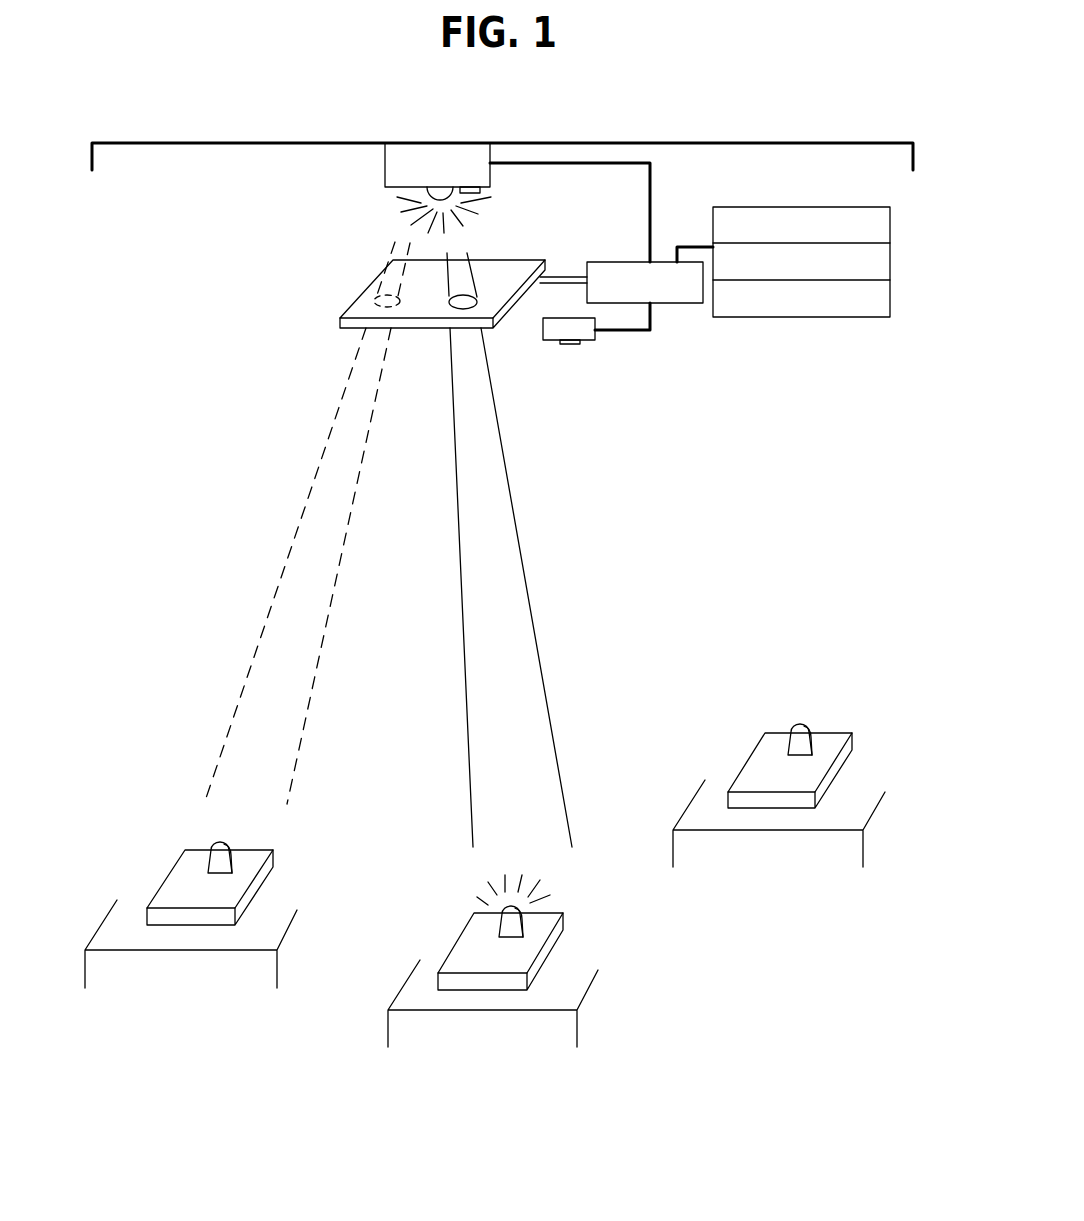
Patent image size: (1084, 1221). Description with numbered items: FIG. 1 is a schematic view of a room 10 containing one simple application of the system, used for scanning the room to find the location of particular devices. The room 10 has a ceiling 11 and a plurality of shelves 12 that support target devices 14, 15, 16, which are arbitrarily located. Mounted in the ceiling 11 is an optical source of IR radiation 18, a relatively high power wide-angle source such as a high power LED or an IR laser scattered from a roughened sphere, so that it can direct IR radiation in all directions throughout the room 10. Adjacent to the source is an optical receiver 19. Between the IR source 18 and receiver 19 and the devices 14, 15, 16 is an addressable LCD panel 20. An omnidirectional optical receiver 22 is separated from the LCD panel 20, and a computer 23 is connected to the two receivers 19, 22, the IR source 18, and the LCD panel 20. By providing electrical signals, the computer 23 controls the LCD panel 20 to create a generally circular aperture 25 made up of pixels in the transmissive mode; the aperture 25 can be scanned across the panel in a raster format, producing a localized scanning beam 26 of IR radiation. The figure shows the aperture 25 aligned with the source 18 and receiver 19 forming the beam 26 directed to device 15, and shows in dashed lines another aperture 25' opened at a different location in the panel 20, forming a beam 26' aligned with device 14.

The room 10 is at (216, 128).
The ceiling 11 is at (690, 142).
The shelves 12 is at (272, 973).
The target device 14 is at (264, 876).
The target device 15 is at (553, 940).
The target device 16 is at (747, 777).
The optical source of IR radiation 18 is at (396, 207).
The optical receiver 19 is at (481, 193).
The addressable LCD panel 20 is at (340, 328).
The omnidirectional optical receiver 22 is at (549, 342).
The computer 23 is at (609, 262).
The circular aperture 25 is at (442, 308).
The another aperture 25' is at (364, 274).
The scanning beam 26 is at (518, 587).
The beam 26' is at (297, 566).